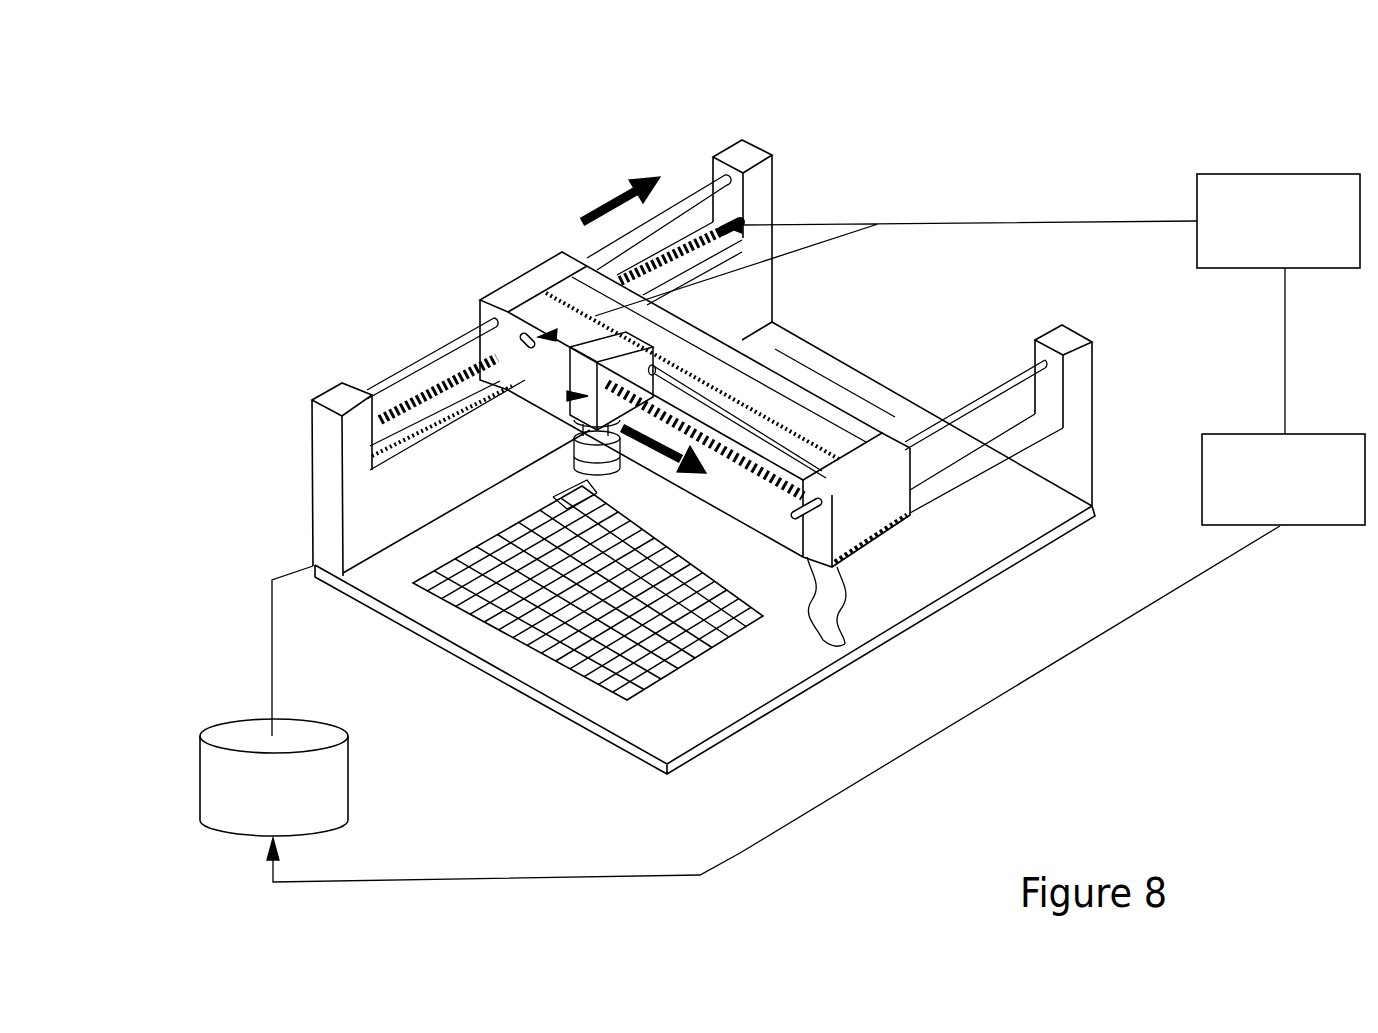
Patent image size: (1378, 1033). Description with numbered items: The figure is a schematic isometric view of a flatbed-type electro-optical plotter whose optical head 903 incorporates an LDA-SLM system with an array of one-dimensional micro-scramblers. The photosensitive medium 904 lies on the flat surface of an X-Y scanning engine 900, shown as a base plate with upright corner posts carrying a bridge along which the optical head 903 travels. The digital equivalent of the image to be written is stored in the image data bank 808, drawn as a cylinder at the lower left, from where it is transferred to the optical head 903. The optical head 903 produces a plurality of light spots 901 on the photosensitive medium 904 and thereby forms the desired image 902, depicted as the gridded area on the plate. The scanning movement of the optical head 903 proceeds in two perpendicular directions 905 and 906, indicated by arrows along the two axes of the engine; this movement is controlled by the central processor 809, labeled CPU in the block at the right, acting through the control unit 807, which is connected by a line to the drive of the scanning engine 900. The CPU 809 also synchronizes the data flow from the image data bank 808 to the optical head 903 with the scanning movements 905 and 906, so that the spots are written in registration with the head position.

The X-Y scanning engine 900 is at (780, 183).
The light spots 901 is at (622, 518).
The desired image 902 is at (443, 562).
The optical head 903 is at (572, 420).
The photosensitive medium 904 is at (751, 573).
The scanning direction 905 is at (624, 183).
The scanning direction 906 is at (477, 357).
The control unit 807 is at (1213, 187).
The image data bank 808 is at (325, 759).
The central processor 809 is at (1228, 462).